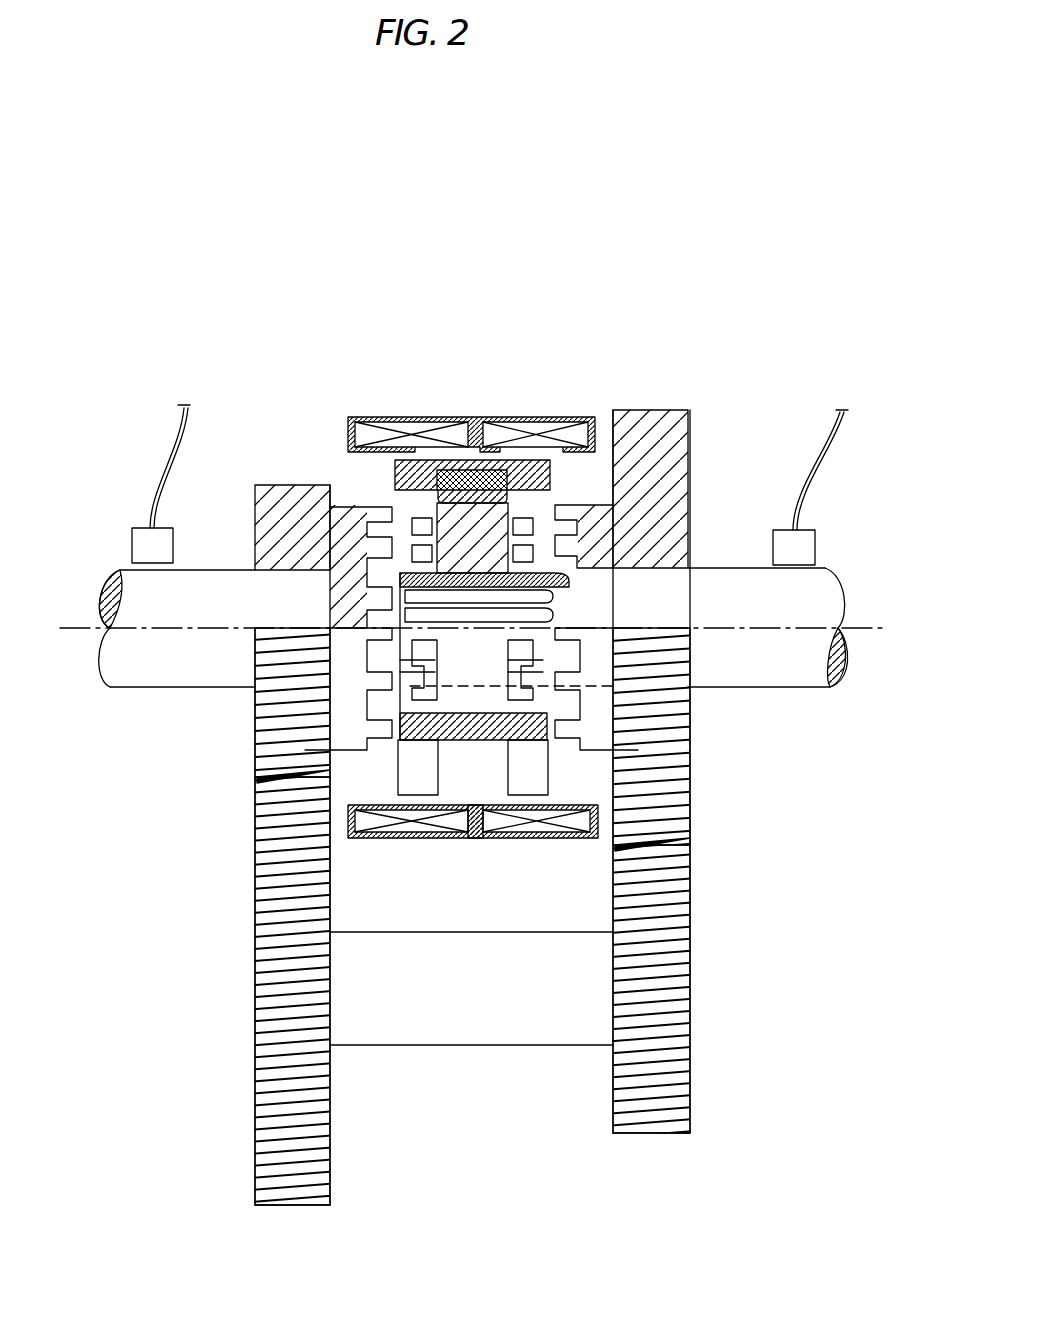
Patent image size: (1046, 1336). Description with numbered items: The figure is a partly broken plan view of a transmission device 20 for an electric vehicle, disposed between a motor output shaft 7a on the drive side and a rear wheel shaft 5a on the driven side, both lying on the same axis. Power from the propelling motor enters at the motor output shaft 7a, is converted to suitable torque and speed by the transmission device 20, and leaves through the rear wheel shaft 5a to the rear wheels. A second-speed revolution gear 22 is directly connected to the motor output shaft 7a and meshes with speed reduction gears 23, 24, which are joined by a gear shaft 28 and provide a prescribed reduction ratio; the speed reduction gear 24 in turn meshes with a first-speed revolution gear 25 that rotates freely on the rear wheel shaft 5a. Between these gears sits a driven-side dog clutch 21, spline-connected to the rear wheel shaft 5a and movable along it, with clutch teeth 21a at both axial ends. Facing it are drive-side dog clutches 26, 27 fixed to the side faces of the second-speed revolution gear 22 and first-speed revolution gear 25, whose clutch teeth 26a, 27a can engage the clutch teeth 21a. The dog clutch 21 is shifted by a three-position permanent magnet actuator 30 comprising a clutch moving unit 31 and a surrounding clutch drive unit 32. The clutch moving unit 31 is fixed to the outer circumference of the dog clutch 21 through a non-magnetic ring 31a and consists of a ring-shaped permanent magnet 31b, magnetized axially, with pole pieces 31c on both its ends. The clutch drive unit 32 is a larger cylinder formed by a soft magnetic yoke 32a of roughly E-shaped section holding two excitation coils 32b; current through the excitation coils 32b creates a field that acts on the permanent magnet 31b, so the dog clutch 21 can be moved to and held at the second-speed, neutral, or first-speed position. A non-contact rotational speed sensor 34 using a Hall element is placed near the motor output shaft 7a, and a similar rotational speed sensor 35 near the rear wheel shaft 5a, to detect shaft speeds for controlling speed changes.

The transmission device 20 is at (180, 312).
The motor output shaft 7a is at (143, 678).
The rear wheel shaft 5a is at (800, 676).
The dog clutch 21 is at (470, 735).
The clutch teeth 21a is at (545, 700).
The second-speed revolution gear 22 is at (255, 722).
The speed reduction gear 23 is at (255, 1165).
The speed reduction gear 24 is at (690, 1120).
The first-speed revolution gear 25 is at (690, 826).
The dog clutch 26 is at (378, 518).
The clutch teeth 26a is at (382, 565).
The dog clutch 27 is at (613, 492).
The clutch teeth 27a is at (578, 522).
The gear shaft 28 is at (468, 1047).
The permanent magnet actuator 30 is at (348, 420).
The clutch moving unit 31 is at (397, 480).
The non-magnetic ring 31a is at (457, 493).
The permanent magnet 31b is at (487, 468).
The pole pieces 31c is at (392, 418).
The clutch drive unit 32 is at (392, 840).
The yoke 32a is at (478, 838).
The excitation coils 32b is at (430, 838).
The rotational speed sensor 34 is at (148, 528).
The rotational speed sensor 35 is at (812, 548).